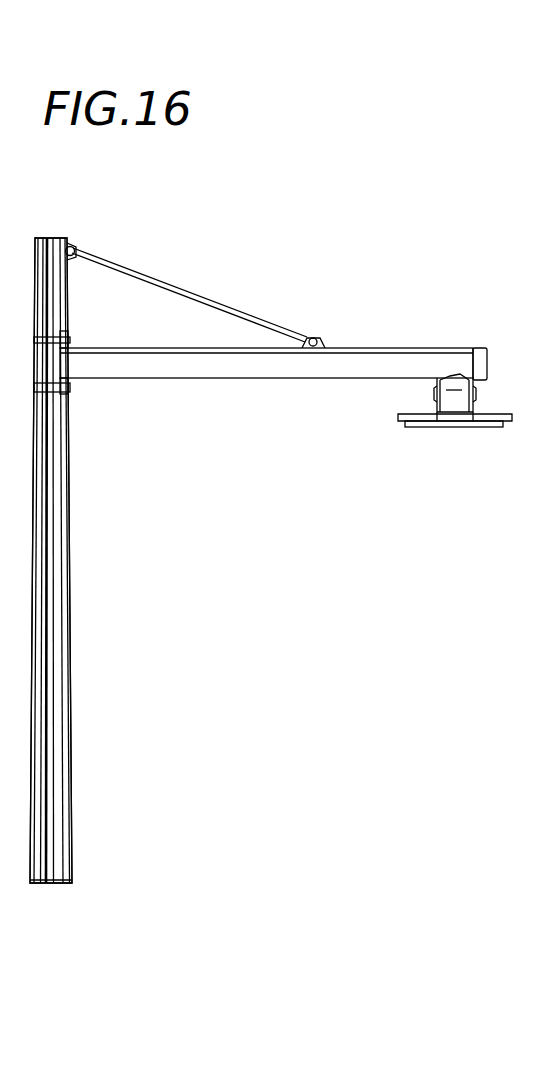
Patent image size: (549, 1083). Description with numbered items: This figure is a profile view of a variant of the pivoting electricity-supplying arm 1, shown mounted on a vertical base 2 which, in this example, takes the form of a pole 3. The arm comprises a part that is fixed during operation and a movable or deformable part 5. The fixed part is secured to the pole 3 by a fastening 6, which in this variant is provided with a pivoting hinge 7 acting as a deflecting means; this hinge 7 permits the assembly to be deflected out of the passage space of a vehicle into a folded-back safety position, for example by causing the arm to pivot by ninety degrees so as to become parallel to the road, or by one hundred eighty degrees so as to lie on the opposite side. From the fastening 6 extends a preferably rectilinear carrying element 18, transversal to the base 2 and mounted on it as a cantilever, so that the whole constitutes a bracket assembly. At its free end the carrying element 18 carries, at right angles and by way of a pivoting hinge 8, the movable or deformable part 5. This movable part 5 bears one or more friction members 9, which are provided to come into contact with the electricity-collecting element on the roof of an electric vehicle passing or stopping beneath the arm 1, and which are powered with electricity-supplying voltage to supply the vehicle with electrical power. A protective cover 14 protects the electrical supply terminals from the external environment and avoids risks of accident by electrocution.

The pivoting electricity-supplying arm 1 is at (220, 236).
The base 2 is at (100, 760).
The pole 3 is at (51, 560).
The movable or deformable part 5 is at (484, 396).
The fastening 6 is at (76, 394).
The pivoting hinge 7 is at (78, 386).
The pivoting hinge 8 is at (435, 385).
The friction members 9 is at (445, 427).
The protective cover 14 is at (441, 395).
The carrying element 18 is at (250, 388).